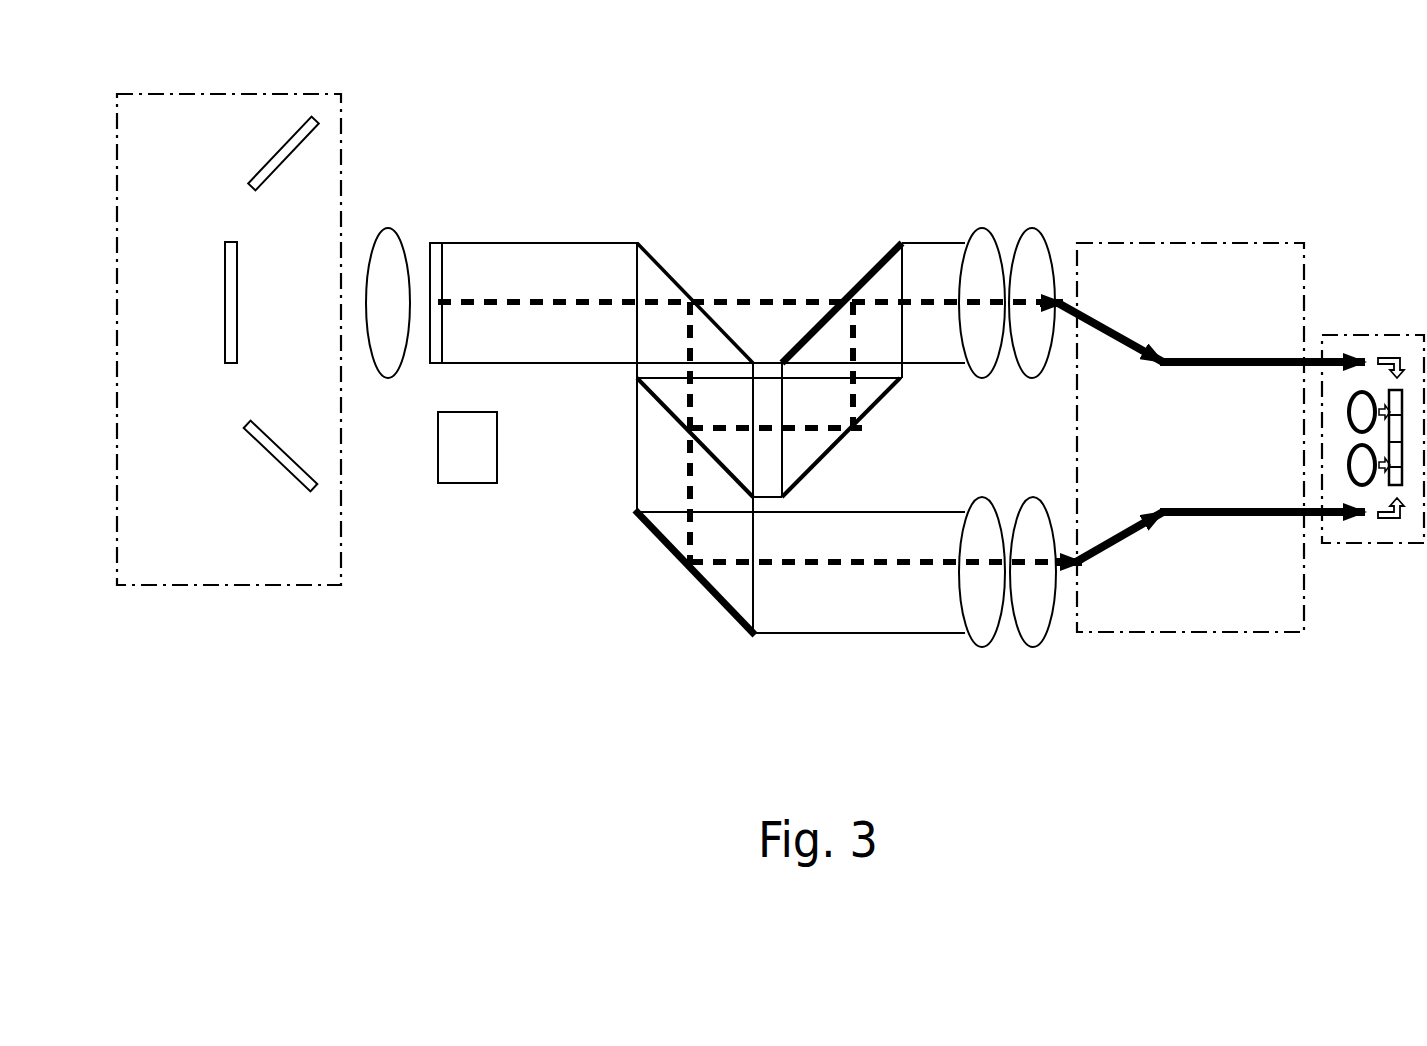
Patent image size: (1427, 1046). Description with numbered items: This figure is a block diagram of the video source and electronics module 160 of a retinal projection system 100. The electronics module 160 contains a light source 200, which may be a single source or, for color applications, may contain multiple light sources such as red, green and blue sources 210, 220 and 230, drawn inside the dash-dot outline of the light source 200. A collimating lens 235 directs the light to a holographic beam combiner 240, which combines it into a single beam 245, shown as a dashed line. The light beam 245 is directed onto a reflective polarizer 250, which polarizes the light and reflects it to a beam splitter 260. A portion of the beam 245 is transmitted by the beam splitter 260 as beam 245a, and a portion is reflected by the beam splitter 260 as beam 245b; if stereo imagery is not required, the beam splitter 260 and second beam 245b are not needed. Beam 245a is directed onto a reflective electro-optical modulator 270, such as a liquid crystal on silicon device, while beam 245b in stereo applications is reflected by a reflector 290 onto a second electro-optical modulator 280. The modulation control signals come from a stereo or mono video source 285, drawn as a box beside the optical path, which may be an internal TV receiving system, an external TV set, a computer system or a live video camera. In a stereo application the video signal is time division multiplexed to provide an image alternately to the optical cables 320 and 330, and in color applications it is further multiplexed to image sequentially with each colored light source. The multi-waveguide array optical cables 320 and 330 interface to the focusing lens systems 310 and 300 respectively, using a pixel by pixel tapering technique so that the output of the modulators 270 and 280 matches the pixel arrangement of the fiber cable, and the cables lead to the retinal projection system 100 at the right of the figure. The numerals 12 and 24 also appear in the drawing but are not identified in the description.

The sample chamber 12 is at (1202, 453).
The lens 24 is at (1054, 256).
The retinal projection system 100 is at (1373, 546).
The electronics module 160 is at (495, 693).
The light source 200 is at (345, 190).
The light source 210 is at (220, 290).
The light source 220 is at (275, 145).
The light source 230 is at (275, 460).
The collimating lens 235 is at (391, 226).
The holographic beam combiner 240 is at (443, 240).
The light beam 245 is at (546, 301).
The beam 245a is at (683, 472).
The beam 245b is at (720, 423).
The reflective polarizer 250 is at (683, 281).
The beam splitter 260 is at (667, 415).
The reflective electro-optical modulator 270 is at (683, 573).
The second electro-optical modulator 280 is at (853, 280).
The video source 285 is at (438, 486).
The reflector 290 is at (873, 407).
The focusing lens system 300 is at (995, 662).
The focusing lens system 310 is at (1007, 224).
The optical cable 320 is at (1191, 342).
The optical cable 330 is at (1146, 534).